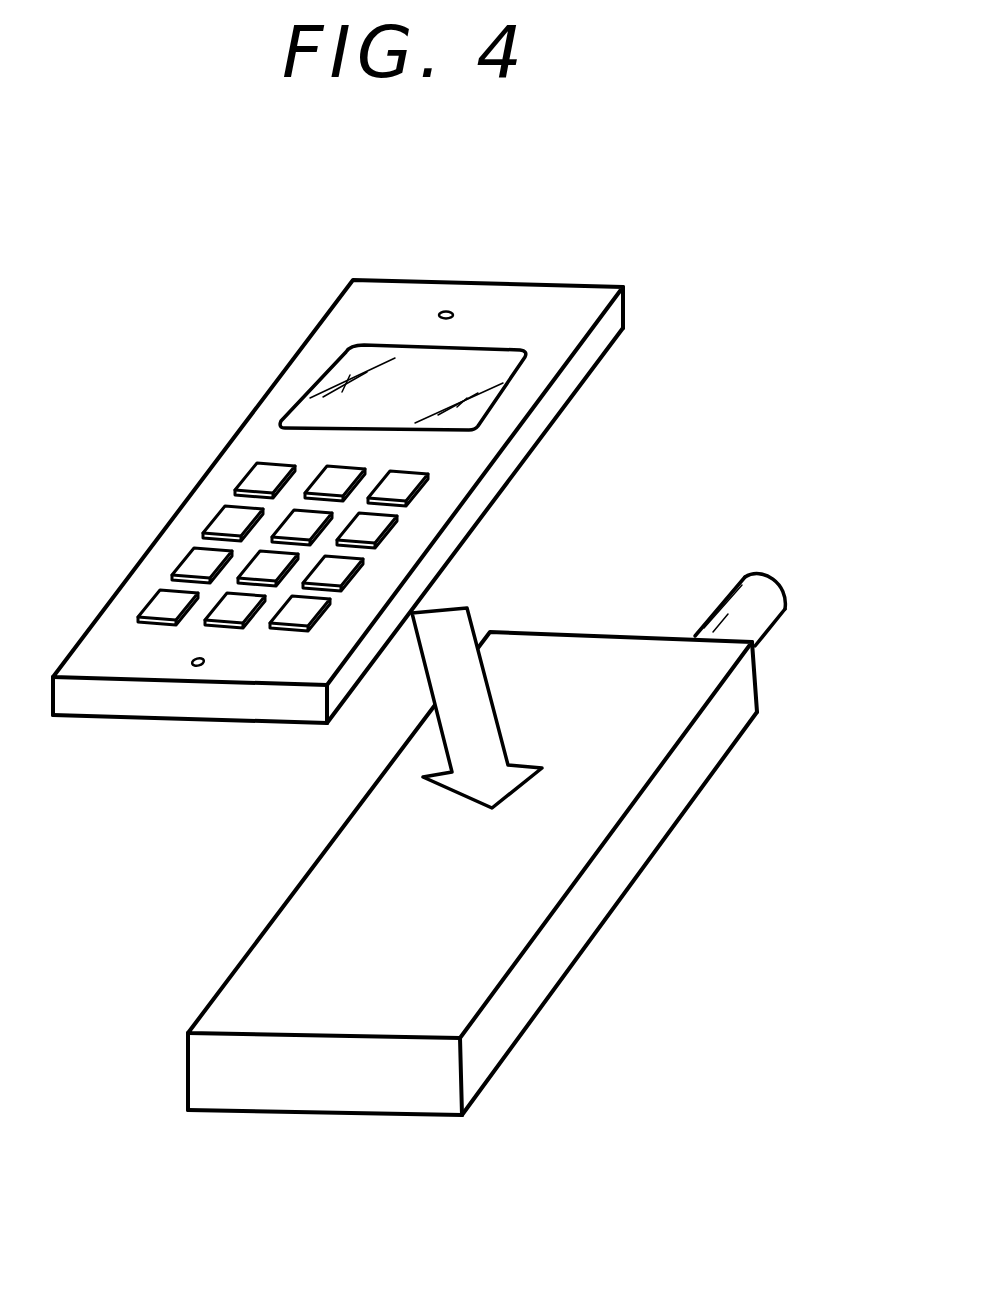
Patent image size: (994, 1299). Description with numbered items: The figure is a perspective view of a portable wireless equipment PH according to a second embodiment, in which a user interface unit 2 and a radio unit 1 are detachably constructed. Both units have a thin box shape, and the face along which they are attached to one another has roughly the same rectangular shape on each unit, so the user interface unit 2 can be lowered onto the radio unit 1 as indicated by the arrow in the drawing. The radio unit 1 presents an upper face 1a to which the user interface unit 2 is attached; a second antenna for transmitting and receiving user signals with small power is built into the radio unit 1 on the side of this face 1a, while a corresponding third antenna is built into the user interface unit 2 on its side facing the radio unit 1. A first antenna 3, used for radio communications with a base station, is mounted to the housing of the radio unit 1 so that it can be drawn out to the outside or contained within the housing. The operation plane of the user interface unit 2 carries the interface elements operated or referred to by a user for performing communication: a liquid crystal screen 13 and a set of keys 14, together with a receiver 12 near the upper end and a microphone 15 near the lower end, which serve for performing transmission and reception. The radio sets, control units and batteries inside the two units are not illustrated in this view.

The portable telephone PH is at (668, 307).
The radio unit 1 is at (472, 873).
The face 1a is at (513, 918).
The user interface unit 2 is at (555, 355).
The first antenna 3 is at (770, 612).
The receiver 12 is at (449, 308).
The liquid crystal screen 13 is at (475, 427).
The keys 14 is at (192, 550).
The microphone 15 is at (190, 665).